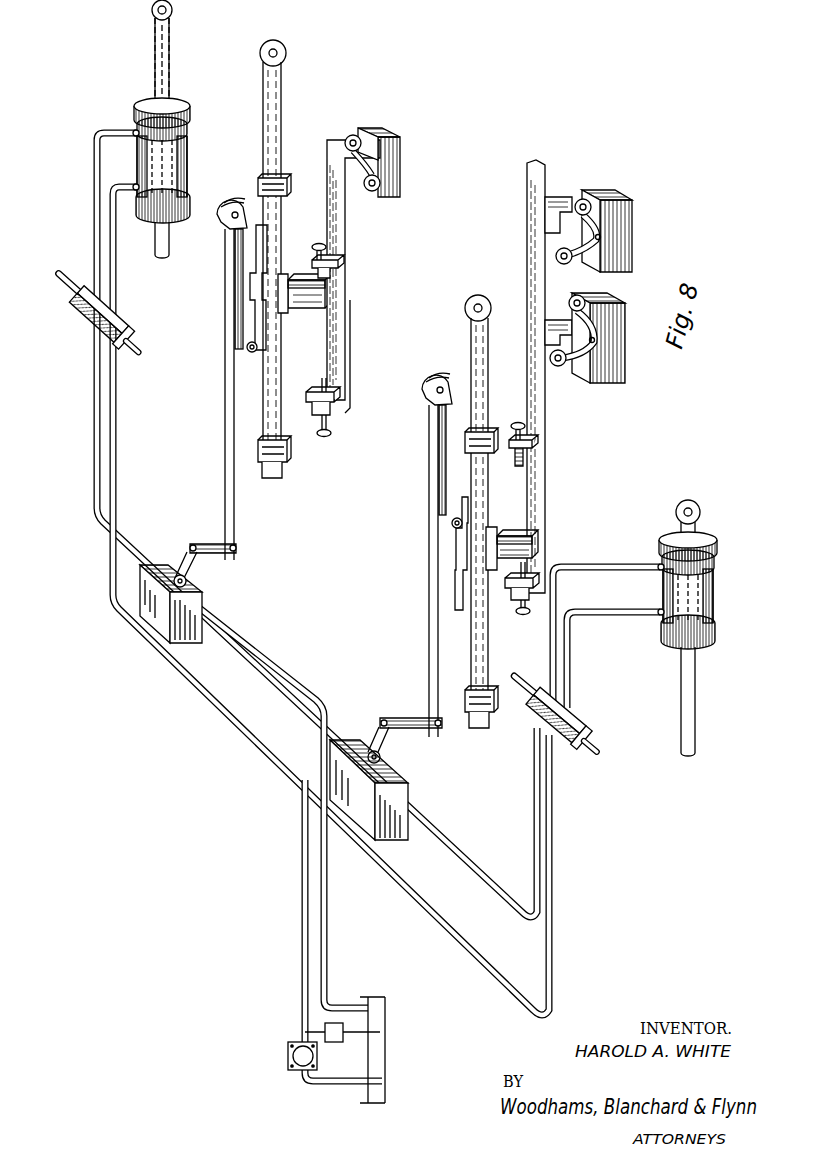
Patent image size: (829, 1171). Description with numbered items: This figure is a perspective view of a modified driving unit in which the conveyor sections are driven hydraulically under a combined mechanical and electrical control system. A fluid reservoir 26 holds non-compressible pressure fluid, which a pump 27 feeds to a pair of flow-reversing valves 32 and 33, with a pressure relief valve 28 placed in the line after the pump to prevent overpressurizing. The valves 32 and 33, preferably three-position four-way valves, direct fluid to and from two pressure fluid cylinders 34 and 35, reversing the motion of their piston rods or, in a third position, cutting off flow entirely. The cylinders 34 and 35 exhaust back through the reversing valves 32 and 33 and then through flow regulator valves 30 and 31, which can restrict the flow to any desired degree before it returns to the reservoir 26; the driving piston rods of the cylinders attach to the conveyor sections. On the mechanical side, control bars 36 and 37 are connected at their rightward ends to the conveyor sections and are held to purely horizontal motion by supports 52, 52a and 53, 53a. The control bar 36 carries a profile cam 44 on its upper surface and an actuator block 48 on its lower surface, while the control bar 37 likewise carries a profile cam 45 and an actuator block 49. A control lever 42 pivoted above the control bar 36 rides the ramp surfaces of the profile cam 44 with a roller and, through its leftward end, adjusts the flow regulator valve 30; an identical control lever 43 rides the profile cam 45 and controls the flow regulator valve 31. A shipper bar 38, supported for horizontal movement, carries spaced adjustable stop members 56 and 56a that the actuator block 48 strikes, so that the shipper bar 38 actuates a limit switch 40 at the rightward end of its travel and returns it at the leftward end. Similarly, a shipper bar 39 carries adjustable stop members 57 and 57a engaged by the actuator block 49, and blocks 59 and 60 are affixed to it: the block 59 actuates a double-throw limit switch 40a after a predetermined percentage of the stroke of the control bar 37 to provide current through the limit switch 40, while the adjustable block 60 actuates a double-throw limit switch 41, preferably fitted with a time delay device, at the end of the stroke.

The fluid reservoir 26 is at (385, 1063).
The pump 27 is at (290, 1060).
The pressure relief valve 28 is at (324, 1029).
The flow regulator valve 30 is at (147, 598).
The flow regulator valve 31 is at (366, 826).
The flow-reversing valve 32 is at (86, 318).
The flow-reversing valve 33 is at (564, 732).
The pressure fluid cylinder 34 is at (188, 146).
The pressure fluid cylinder 35 is at (706, 604).
The control bar 36 is at (270, 153).
The control bar 37 is at (478, 482).
The shipper bar 38 is at (346, 240).
The shipper bar 39 is at (545, 430).
The limit switch 40 is at (368, 126).
The double-throw limit switch 40a is at (585, 372).
The double-throw limit switch 41 is at (610, 268).
The control lever 42 is at (230, 347).
The control lever 43 is at (438, 526).
The profile cam 44 is at (258, 292).
The profile cam 45 is at (462, 578).
The actuator block 48 is at (306, 300).
The actuator block 49 is at (514, 538).
The support 52 is at (284, 455).
The support 52a is at (283, 188).
The support 53 is at (496, 704).
The support 53a is at (486, 444).
The adjustable stop member 56 is at (310, 400).
The adjustable stop member 56a is at (312, 262).
The adjustable stop member 57 is at (511, 580).
The adjustable stop member 57a is at (512, 442).
The block 59 is at (556, 320).
The block 60 is at (556, 205).